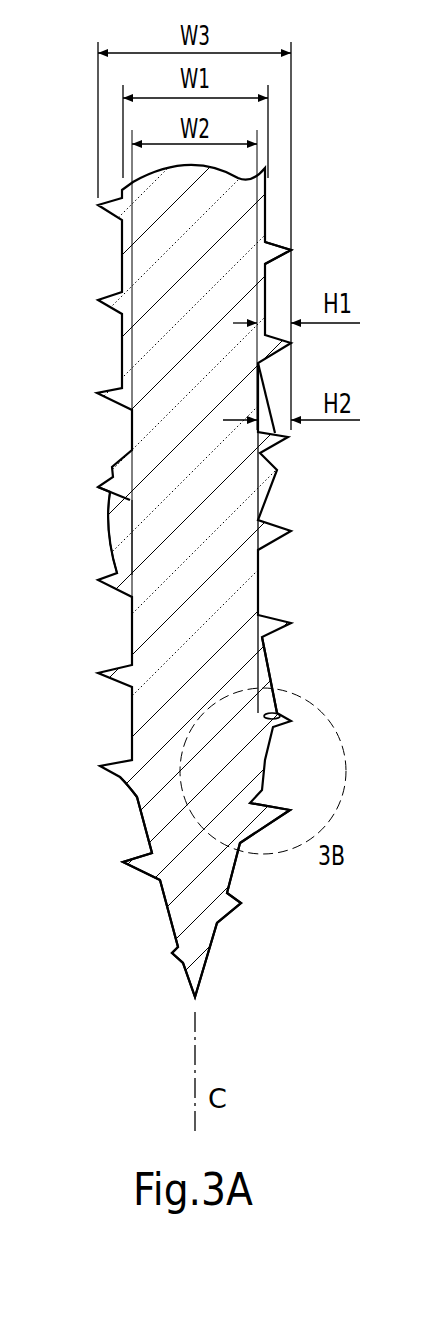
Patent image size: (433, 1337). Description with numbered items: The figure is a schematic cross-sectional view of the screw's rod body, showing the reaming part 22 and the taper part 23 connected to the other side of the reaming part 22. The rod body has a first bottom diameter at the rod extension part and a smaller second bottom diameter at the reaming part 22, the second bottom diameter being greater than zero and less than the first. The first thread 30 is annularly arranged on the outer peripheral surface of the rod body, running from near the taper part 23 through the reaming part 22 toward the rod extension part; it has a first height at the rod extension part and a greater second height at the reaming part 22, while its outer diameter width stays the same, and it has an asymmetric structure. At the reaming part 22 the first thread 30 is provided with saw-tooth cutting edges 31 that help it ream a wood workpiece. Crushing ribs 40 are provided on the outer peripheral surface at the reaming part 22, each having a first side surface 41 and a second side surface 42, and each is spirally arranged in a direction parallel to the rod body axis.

The reaming part 22 is at (90, 377).
The taper part 23 is at (90, 757).
The first thread 30 is at (283, 245).
The saw-tooth cutting edges 31 is at (282, 722).
The crushing rib 40 is at (272, 657).
The first side surface 41 is at (267, 684).
The second side surface 42 is at (121, 523).